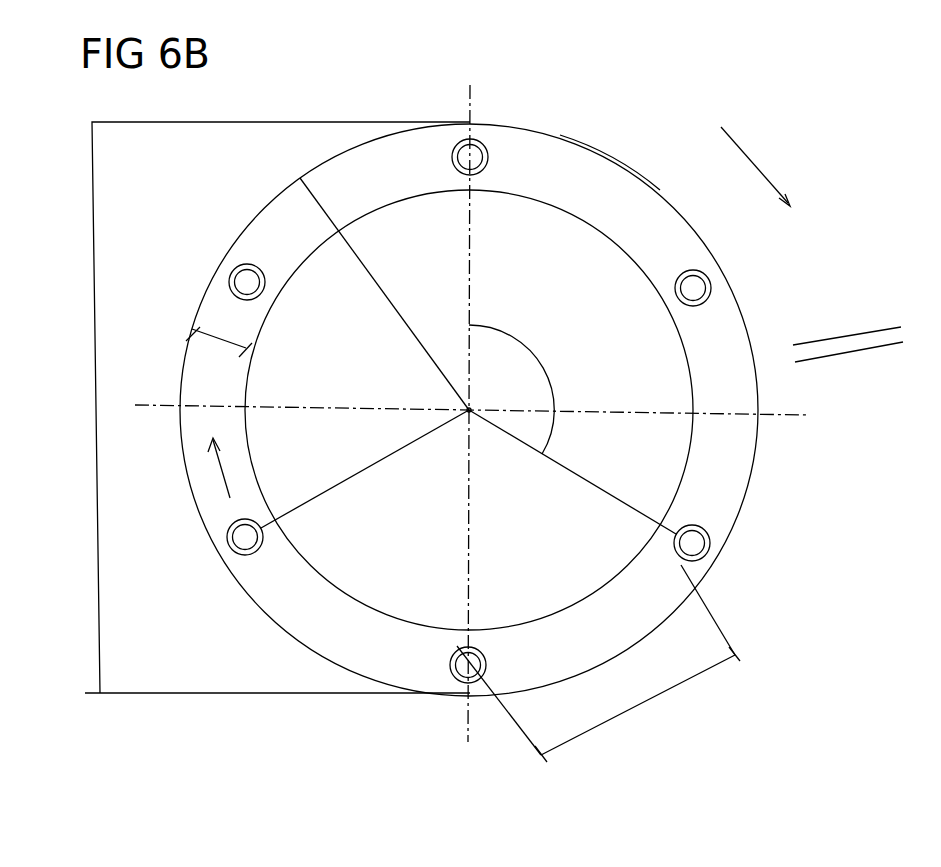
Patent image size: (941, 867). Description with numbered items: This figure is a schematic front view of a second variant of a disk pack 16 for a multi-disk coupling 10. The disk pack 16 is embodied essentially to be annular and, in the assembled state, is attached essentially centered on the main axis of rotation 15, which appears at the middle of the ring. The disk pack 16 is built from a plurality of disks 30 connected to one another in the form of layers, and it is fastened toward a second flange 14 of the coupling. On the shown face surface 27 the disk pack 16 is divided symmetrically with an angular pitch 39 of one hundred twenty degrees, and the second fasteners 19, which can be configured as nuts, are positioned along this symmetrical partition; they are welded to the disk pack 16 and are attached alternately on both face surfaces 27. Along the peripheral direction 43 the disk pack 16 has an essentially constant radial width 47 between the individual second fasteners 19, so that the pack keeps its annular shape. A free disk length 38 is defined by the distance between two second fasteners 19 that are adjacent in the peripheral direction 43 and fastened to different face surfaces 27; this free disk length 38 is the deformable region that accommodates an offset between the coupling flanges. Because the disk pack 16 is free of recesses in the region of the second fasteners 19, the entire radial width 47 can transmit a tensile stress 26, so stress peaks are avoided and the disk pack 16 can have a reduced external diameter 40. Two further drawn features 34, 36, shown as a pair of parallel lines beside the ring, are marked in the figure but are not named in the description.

The multi-disk coupling 10 is at (122, 162).
The second flange 14 is at (408, 101).
The main axis of rotation 15 is at (472, 406).
The disk pack 16 is at (607, 157).
The second fasteners 19 is at (481, 174).
The tensile stress 26 is at (216, 470).
The face surface 27 is at (272, 213).
The disks 30 is at (172, 162).
The first plane 34 is at (848, 356).
The second plane 36 is at (846, 334).
The free disk length 38 is at (632, 708).
The angular pitch 39 is at (522, 338).
The external diameter 40 is at (398, 293).
The peripheral direction 43 is at (752, 152).
The radial width 47 is at (190, 336).